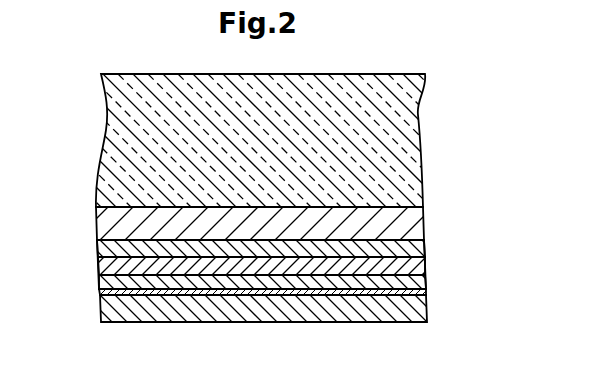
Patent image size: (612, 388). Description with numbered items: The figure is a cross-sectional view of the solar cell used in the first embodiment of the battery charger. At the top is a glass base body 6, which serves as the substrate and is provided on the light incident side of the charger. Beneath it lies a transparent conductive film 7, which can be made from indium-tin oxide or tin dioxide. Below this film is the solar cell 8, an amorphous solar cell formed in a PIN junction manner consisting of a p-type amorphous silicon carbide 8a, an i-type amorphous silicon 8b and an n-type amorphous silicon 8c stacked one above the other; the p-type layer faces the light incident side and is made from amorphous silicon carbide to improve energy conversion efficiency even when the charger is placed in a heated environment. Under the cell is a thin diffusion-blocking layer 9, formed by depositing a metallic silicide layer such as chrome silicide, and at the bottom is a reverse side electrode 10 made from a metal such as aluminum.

The glass base body 6 is at (396, 140).
The transparent conductive film 7 is at (414, 217).
The solar cell 8 is at (492, 225).
The p-type amorphous silicon carbide 8a is at (421, 249).
The i-type amorphous silicon 8b is at (422, 265).
The n-type amorphous silicon 8c is at (422, 285).
The diffusion-blocking layer 9 is at (102, 291).
The reverse side electrode 10 is at (169, 312).